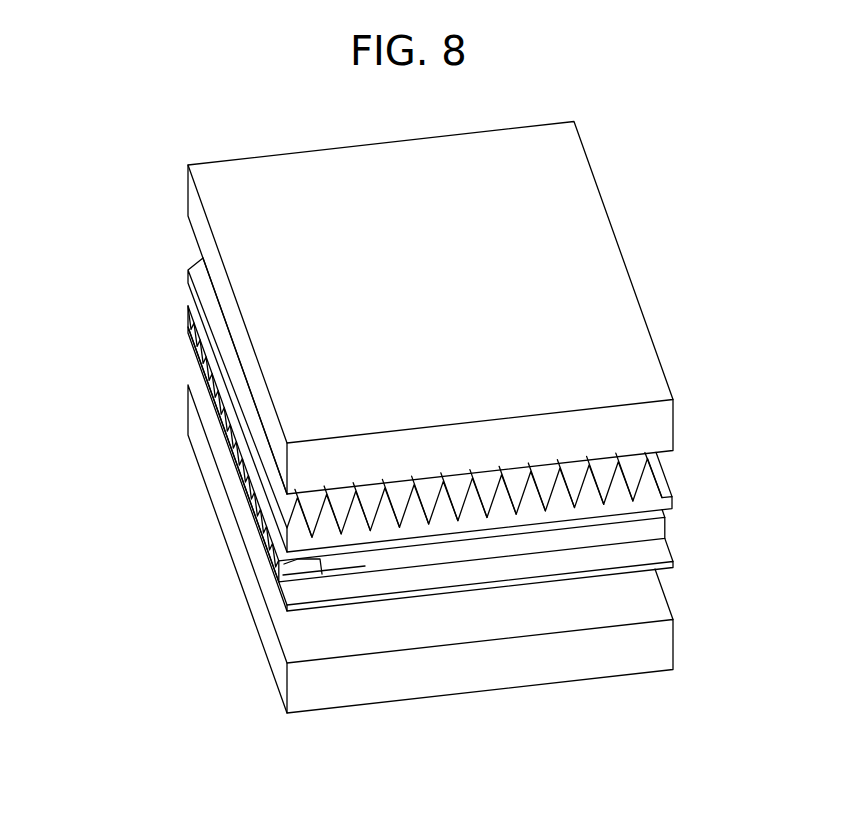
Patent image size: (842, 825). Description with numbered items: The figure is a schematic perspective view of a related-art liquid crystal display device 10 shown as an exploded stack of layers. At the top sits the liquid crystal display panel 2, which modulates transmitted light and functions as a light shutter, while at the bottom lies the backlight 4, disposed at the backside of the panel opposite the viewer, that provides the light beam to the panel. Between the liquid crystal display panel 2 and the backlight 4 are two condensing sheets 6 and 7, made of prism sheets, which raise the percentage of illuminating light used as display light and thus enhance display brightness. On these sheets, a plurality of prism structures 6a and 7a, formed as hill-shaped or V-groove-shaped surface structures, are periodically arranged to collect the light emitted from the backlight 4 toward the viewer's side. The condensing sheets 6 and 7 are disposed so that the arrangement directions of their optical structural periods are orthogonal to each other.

The liquid crystal display device 10 is at (88, 197).
The liquid crystal display panel 2 is at (673, 421).
The backlight 4 is at (673, 645).
The condensing sheet 6 is at (672, 503).
The prism structure 6a is at (270, 500).
The condensing sheet 7 is at (673, 563).
The prism structure 7a is at (292, 563).